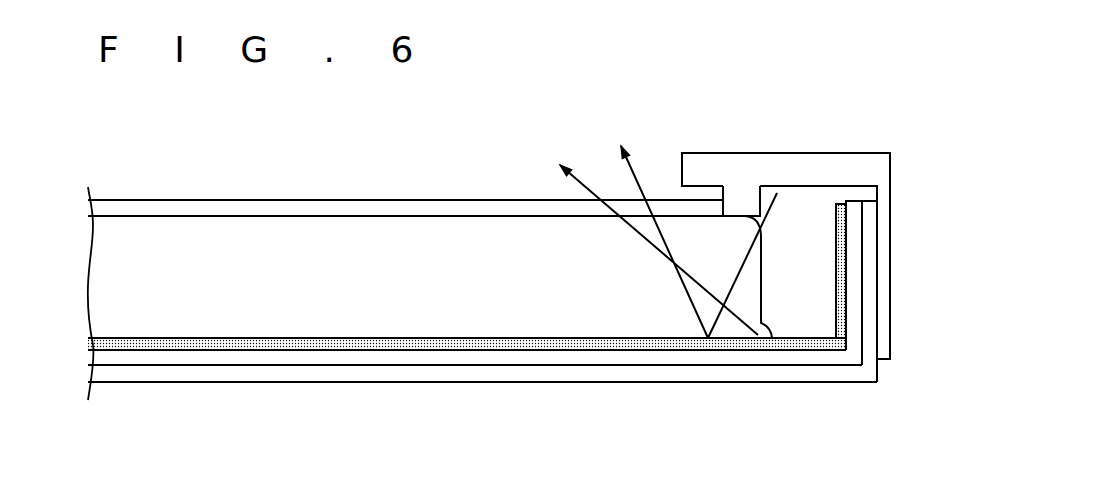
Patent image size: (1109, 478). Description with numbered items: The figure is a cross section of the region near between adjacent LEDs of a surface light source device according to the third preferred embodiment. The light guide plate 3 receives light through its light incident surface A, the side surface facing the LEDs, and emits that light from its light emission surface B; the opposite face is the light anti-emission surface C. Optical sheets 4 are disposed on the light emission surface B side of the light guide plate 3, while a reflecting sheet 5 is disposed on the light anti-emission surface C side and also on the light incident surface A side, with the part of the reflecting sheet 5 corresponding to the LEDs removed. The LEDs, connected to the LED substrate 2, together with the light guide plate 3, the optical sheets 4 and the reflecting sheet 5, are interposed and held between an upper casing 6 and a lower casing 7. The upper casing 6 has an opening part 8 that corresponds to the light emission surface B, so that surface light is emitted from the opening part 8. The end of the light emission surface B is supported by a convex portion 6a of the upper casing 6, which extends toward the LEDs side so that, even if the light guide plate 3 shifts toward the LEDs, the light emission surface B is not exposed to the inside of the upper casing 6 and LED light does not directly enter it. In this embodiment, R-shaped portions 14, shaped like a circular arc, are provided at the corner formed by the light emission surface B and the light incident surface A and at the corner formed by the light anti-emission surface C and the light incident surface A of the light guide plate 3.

The LED substrate 2 is at (856, 360).
The light guide plate 3 is at (517, 240).
The optical sheets 4 is at (343, 208).
The reflecting sheet 5 is at (297, 341).
The upper casing 6 is at (825, 168).
The convex portion 6a is at (732, 203).
The lower casing 7 is at (465, 373).
The opening part 8 is at (682, 172).
The R-shaped portions 14 is at (757, 213).
The light incident surface A is at (768, 265).
The light emission surface B is at (437, 217).
The light anti-emission surface C is at (386, 339).